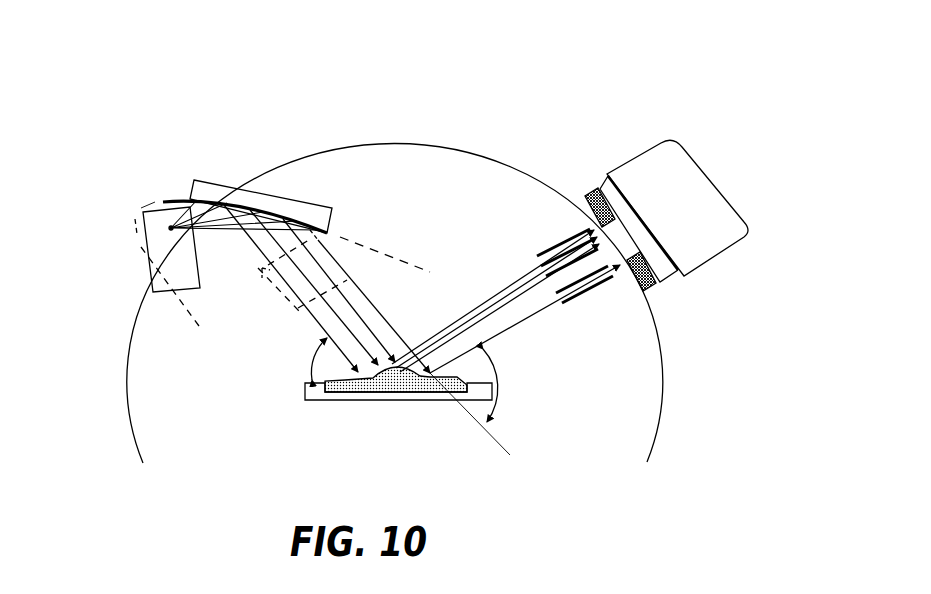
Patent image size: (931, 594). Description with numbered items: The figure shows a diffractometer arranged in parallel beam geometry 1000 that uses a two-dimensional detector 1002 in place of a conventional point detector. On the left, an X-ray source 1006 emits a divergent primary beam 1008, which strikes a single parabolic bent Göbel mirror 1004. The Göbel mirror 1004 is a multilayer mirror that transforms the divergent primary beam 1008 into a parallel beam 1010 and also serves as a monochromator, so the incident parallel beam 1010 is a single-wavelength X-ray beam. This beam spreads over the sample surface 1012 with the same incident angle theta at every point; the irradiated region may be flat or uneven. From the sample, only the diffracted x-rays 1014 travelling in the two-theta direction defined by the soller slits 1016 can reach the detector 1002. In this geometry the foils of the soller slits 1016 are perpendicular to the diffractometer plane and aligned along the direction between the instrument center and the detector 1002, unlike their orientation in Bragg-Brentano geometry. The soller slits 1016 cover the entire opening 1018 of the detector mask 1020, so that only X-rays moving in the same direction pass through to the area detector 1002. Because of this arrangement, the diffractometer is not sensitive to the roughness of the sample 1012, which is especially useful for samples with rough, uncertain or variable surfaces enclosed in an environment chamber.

The parallel beam geometry 1000 is at (550, 54).
The two-dimensional detector 1002 is at (695, 175).
The Göbel mirror 1004 is at (270, 207).
The X-ray source 1006 is at (170, 229).
The divergent primary beam 1008 is at (218, 230).
The parallel beam 1010 is at (322, 311).
The sample surface 1012 is at (411, 410).
The diffracted x-rays 1014 is at (490, 282).
The soller slits 1016 is at (556, 287).
The opening 1018 is at (620, 243).
The detector mask 1020 is at (583, 196).